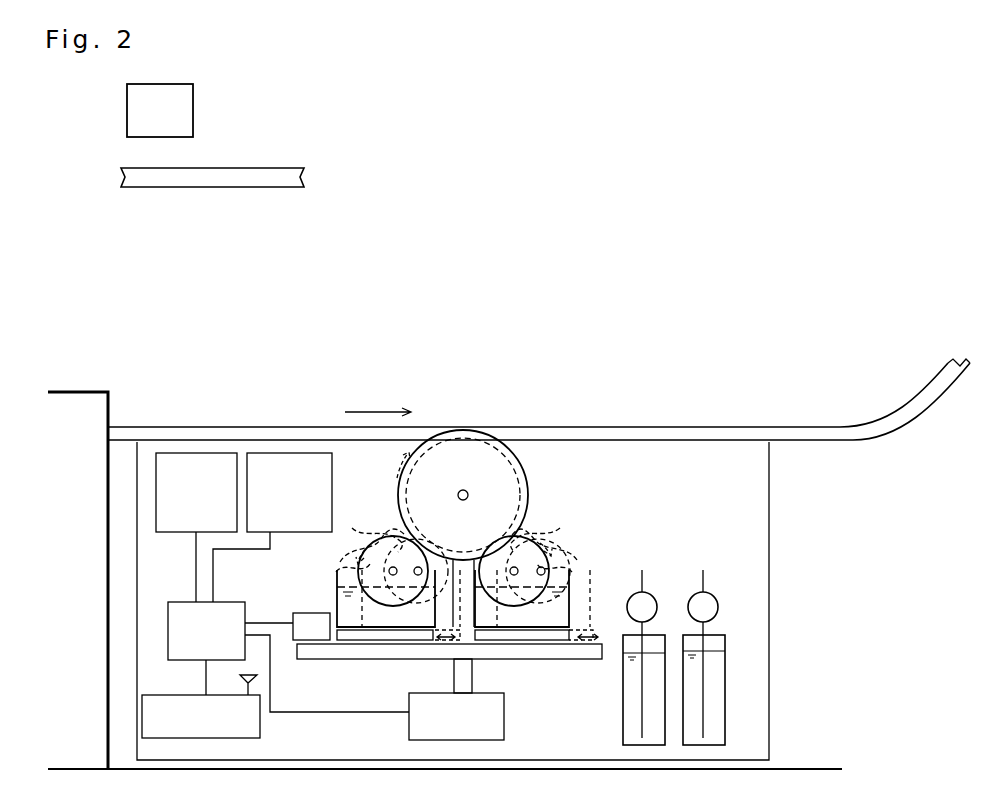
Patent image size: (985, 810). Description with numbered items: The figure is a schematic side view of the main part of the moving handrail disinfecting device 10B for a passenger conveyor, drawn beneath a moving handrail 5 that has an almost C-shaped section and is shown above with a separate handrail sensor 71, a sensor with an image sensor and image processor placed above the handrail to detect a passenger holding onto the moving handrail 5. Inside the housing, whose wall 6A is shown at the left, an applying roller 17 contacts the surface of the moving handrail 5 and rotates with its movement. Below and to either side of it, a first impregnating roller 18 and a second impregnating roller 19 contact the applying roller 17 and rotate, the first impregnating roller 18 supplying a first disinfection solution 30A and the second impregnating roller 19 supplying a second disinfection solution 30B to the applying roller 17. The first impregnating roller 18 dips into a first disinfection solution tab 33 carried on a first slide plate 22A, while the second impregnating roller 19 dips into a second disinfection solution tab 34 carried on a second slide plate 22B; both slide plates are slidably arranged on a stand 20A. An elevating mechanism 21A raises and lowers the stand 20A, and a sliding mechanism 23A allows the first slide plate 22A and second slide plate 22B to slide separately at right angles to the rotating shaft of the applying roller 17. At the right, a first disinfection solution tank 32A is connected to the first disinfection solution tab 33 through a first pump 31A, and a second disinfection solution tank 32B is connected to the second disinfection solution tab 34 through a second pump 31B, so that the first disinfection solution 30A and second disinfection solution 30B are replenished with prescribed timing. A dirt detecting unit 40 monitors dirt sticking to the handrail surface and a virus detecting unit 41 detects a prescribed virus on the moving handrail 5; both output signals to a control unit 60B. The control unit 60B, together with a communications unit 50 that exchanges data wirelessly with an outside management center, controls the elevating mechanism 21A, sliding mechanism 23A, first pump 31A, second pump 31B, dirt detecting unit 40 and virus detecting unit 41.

The handrail sensor 71 is at (127, 118).
The moving handrail 5 is at (247, 168).
The housing wall 6A is at (108, 488).
The moving handrail disinfecting device 10B is at (808, 551).
The applying roller 17 is at (521, 459).
The first impregnating roller 18 is at (557, 537).
The second impregnating roller 19 is at (366, 536).
The stand 20A is at (522, 660).
The elevating mechanism 21A is at (506, 700).
The first slide plate 22A is at (512, 641).
The second slide plate 22B is at (392, 641).
The sliding mechanism 23A is at (293, 646).
The first disinfection solution 30A is at (592, 596).
The second disinfection solution 30B is at (337, 605).
The first pump 31A is at (718, 604).
The second pump 31B is at (657, 604).
The first disinfection solution tank 32A is at (725, 663).
The second disinfection solution tank 32B is at (623, 670).
The first disinfection solution tab 33 is at (587, 567).
The second disinfection solution tab 34 is at (336, 568).
The dirt detecting unit 40 is at (332, 487).
The virus detecting unit 41 is at (157, 500).
The communications unit 50 is at (178, 695).
The control unit 60B is at (168, 606).